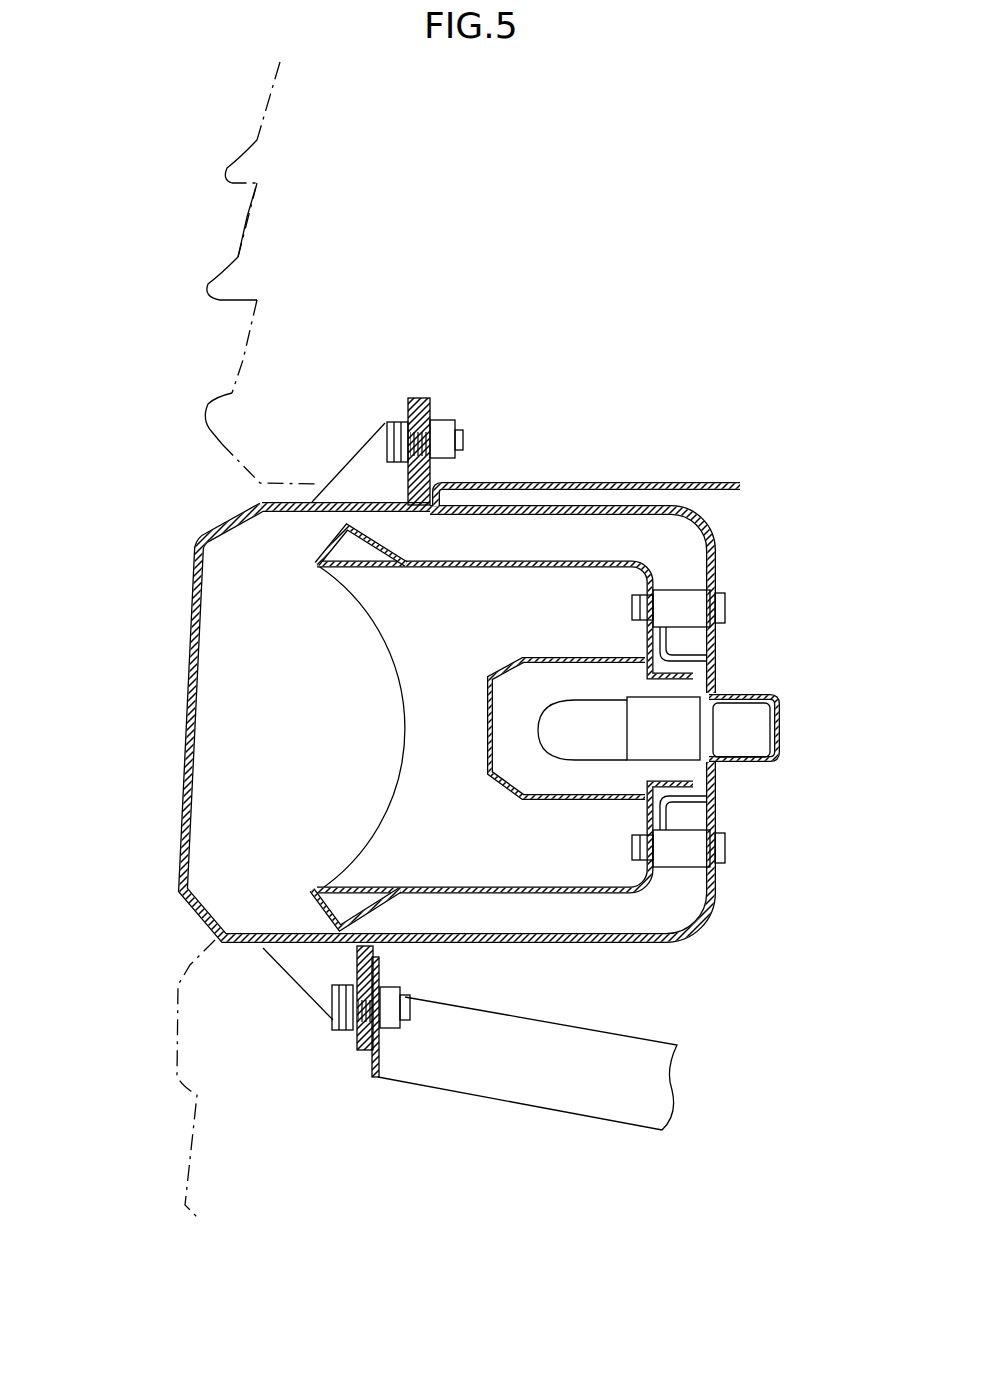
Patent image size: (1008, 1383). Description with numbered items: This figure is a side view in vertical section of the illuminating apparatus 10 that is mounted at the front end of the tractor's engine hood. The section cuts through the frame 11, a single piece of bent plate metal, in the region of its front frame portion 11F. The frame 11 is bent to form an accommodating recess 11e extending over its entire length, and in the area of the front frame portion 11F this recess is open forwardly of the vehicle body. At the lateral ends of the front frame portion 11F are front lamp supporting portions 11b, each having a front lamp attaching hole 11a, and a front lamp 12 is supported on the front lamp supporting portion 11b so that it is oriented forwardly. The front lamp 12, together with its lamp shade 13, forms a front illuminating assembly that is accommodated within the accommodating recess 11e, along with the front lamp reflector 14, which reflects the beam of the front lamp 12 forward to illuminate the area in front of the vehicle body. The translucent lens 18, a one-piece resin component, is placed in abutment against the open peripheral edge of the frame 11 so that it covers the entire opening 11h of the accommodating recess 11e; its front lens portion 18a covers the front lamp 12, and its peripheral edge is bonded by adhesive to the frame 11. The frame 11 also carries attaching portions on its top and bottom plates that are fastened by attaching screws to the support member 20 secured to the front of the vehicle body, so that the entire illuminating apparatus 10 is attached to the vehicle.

The illuminating apparatus 10 is at (158, 512).
The frame 11 is at (531, 724).
The front frame portion 11F is at (730, 547).
The front lamp attaching hole 11a is at (705, 832).
The front lamp supporting portion 11b is at (712, 582).
The accommodating recess 11e is at (550, 915).
The opening 11h is at (220, 858).
The front lamp 12 is at (578, 705).
The lamp shade 13 is at (488, 704).
The front lamp reflector 14 is at (318, 568).
The translucent lens 18 is at (190, 641).
The front lens portion 18a is at (188, 700).
The support member 20 is at (583, 482).